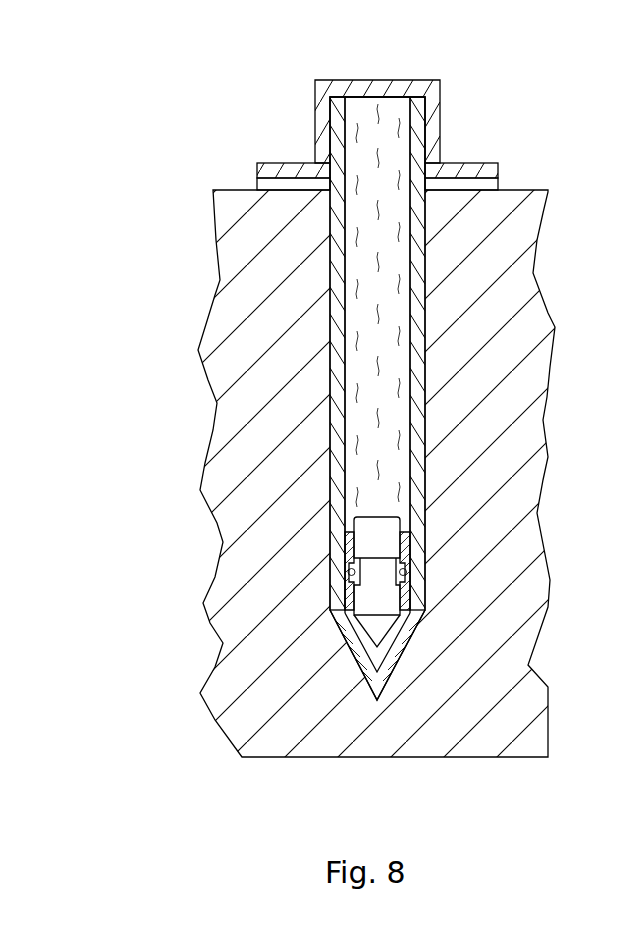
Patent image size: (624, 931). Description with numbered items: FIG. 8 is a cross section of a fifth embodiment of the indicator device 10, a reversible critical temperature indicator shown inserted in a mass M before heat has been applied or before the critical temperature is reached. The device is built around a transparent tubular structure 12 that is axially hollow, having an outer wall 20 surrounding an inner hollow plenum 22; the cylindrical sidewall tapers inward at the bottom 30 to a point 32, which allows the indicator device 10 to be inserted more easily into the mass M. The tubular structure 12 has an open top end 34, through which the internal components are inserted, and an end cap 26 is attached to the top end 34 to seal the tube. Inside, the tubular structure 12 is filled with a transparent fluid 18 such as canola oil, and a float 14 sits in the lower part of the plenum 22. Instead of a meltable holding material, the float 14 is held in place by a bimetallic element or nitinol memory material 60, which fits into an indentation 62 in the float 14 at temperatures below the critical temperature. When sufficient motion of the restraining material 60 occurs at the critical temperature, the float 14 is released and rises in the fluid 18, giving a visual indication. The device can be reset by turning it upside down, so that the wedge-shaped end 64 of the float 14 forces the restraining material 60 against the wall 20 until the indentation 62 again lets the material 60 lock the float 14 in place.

The indicator device 10 is at (278, 78).
The tubular structure 12 is at (329, 337).
The float 14 is at (347, 533).
The fluid 18 is at (355, 402).
The outer wall 20 is at (329, 286).
The inner hollow plenum 22 is at (397, 370).
The end cap 26 is at (441, 125).
The bottom 30 is at (388, 614).
The point 32 is at (379, 697).
The open top end 34 is at (350, 102).
The bimetallic or nitinol memory material 60 is at (415, 563).
The indentation 62 is at (345, 566).
The wedge-shaped end 64 is at (372, 644).
The mass M is at (238, 718).